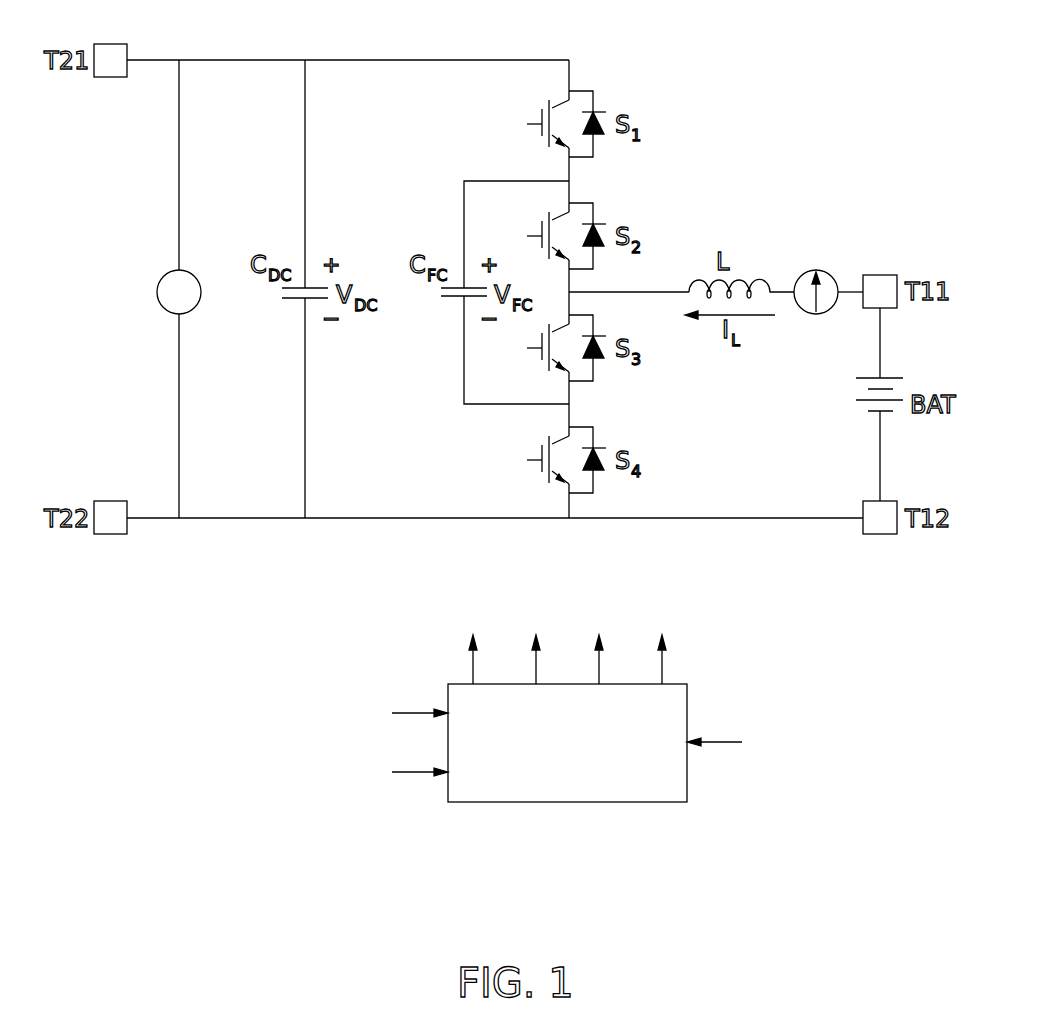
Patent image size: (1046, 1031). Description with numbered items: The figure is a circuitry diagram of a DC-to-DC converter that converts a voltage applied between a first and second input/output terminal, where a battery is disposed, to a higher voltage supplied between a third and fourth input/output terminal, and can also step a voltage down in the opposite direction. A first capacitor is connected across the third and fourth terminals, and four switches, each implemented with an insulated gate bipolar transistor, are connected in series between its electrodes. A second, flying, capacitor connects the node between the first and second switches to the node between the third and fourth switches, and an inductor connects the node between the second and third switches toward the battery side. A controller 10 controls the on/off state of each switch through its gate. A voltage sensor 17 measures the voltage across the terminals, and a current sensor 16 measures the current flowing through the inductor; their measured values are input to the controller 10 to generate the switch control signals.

The controller 10 is at (568, 803).
The current sensor 16 is at (825, 270).
The voltage sensor 17 is at (157, 292).